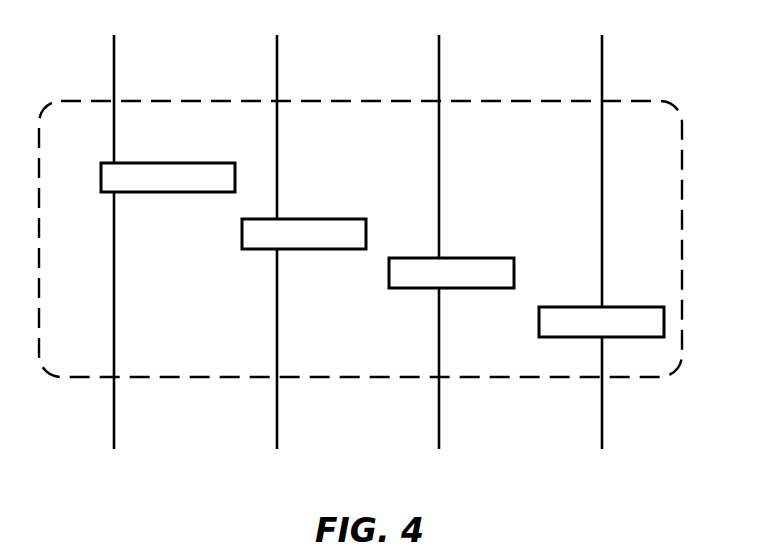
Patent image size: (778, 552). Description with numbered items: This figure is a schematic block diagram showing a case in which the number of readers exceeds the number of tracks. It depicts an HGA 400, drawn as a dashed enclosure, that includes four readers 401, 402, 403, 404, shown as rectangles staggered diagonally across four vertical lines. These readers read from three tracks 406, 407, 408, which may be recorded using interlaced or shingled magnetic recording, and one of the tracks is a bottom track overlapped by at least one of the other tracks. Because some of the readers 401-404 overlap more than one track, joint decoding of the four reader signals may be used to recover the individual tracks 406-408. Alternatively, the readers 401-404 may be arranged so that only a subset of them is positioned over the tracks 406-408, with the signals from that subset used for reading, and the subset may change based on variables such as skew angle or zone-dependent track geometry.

The HGA 400 is at (647, 101).
The reader 401 is at (187, 163).
The reader 402 is at (328, 219).
The reader 403 is at (490, 254).
The reader 404 is at (639, 310).
The track 406 is at (195, 432).
The track 407 is at (360, 432).
The track 408 is at (522, 432).